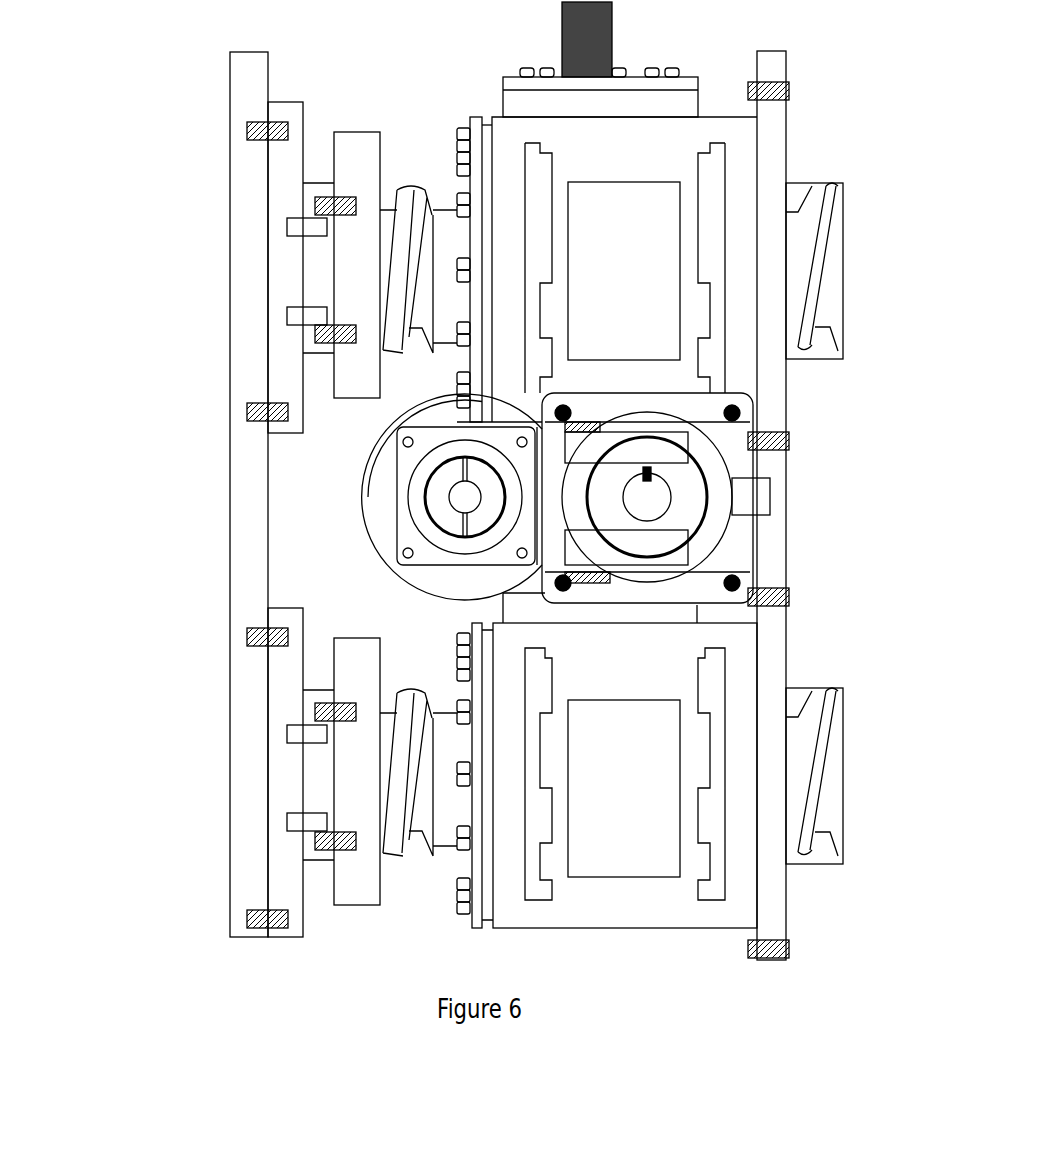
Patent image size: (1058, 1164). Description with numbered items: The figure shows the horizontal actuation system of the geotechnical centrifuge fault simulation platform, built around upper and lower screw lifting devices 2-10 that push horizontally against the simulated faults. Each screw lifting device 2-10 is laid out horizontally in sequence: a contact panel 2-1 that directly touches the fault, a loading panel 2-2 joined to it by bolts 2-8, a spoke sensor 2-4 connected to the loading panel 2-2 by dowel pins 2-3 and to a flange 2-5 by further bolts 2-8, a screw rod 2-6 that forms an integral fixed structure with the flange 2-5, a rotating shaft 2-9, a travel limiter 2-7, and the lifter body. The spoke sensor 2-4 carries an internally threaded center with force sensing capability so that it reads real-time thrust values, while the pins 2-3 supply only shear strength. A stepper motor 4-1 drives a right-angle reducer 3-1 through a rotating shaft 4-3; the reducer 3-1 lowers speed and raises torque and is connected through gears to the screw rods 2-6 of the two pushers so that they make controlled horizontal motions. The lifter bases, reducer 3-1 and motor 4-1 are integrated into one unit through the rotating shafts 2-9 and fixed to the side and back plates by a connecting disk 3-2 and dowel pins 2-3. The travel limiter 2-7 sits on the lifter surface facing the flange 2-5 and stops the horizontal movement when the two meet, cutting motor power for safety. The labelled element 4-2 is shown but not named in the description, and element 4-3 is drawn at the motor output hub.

The contact panel 2-1 is at (243, 120).
The loading panel 2-2 is at (272, 182).
The dowel pin 2-3 is at (303, 228).
The spoke sensor 2-4 is at (322, 267).
The flange 2-5 is at (356, 272).
The screw rod 2-6 is at (404, 279).
The travel limiter 2-7 is at (463, 150).
The bolt 2-8 is at (250, 130).
The rotating shaft 2-9 is at (602, 38).
The screw lifting device 2-10 is at (740, 133).
The right-angle reducer 3-1 is at (423, 517).
The connecting disk 3-2 is at (388, 481).
The stepper motor 4-1 is at (718, 470).
The key 4-2 is at (651, 479).
The rotating shaft 4-3 is at (648, 497).